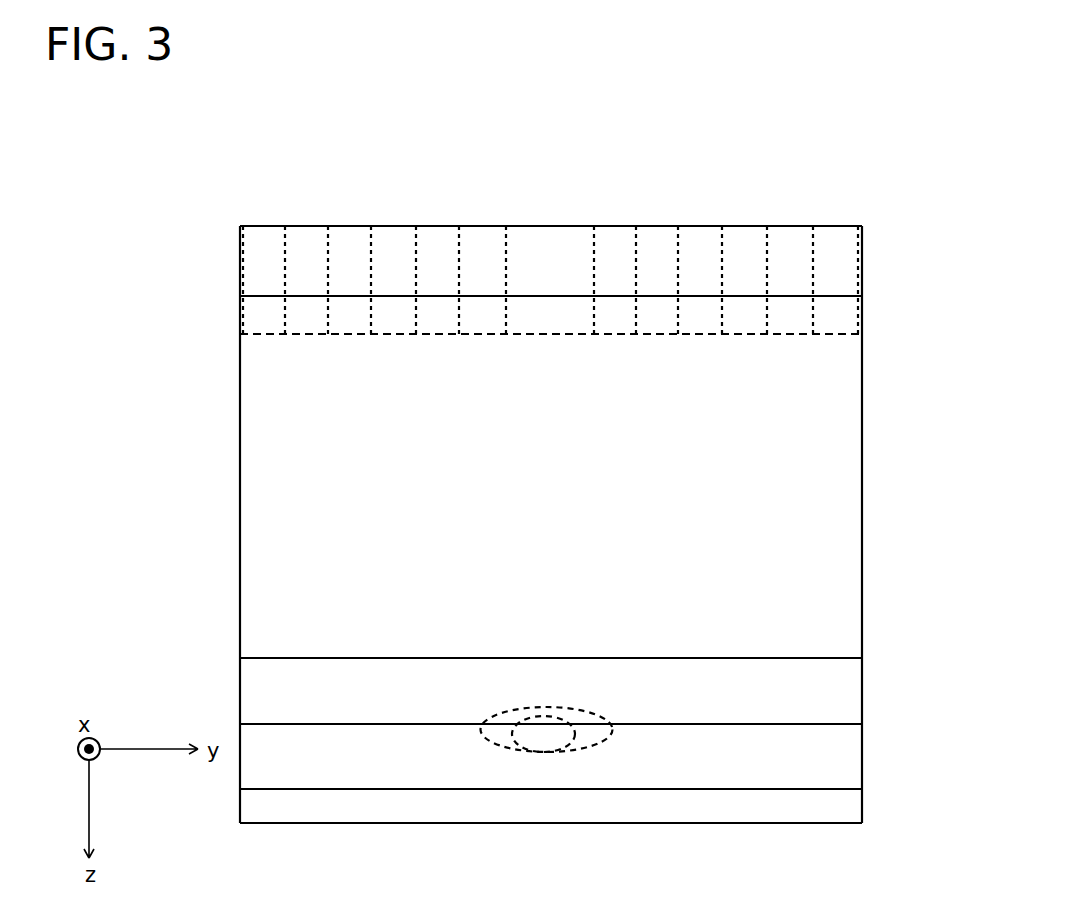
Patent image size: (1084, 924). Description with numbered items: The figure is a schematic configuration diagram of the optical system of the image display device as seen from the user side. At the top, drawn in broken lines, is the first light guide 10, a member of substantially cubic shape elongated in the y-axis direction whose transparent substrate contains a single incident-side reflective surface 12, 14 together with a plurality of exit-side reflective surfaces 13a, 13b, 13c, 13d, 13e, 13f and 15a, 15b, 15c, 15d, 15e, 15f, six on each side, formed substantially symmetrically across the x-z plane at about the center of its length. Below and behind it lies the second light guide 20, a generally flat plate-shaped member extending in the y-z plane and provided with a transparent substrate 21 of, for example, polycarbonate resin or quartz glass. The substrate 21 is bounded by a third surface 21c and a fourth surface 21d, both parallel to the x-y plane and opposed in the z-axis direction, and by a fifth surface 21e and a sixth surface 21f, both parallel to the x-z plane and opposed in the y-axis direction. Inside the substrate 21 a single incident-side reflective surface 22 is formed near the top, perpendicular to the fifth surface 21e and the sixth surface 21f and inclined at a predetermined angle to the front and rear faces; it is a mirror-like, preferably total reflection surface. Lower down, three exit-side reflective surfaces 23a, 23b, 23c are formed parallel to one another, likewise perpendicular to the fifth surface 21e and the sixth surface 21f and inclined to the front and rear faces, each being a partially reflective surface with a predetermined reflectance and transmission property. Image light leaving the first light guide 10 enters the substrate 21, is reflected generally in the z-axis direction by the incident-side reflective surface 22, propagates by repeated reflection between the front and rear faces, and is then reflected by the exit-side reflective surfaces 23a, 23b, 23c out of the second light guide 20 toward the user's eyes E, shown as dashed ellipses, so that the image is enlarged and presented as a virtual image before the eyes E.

The first light guide 10 is at (262, 336).
The incident-side reflective surface 12 is at (594, 253).
The exit-side reflective surface 13a is at (636, 253).
The exit-side reflective surface 13b is at (678, 253).
The exit-side reflective surface 13c is at (722, 253).
The exit-side reflective surface 13d is at (767, 253).
The exit-side reflective surface 13e is at (813, 253).
The exit-side reflective surface 13f is at (858, 253).
The incident-side reflective surface 14 is at (506, 253).
The exit-side reflective surface 15a is at (459, 253).
The exit-side reflective surface 15b is at (416, 253).
The exit-side reflective surface 15c is at (371, 253).
The exit-side reflective surface 15d is at (328, 253).
The exit-side reflective surface 15e is at (285, 253).
The exit-side reflective surface 15f is at (243, 253).
The second light guide 20 is at (893, 437).
The substrate 21 is at (862, 413).
The third surface 21c is at (828, 226).
The fourth surface 21d is at (697, 824).
The fifth surface 21e is at (865, 507).
The sixth surface 21f is at (239, 507).
The incident-side reflective surface 22 is at (842, 297).
The exit-side reflective surface 23a is at (827, 658).
The exit-side reflective surface 23b is at (827, 724).
The exit-side reflective surface 23c is at (827, 789).
The user's eyes E is at (507, 751).